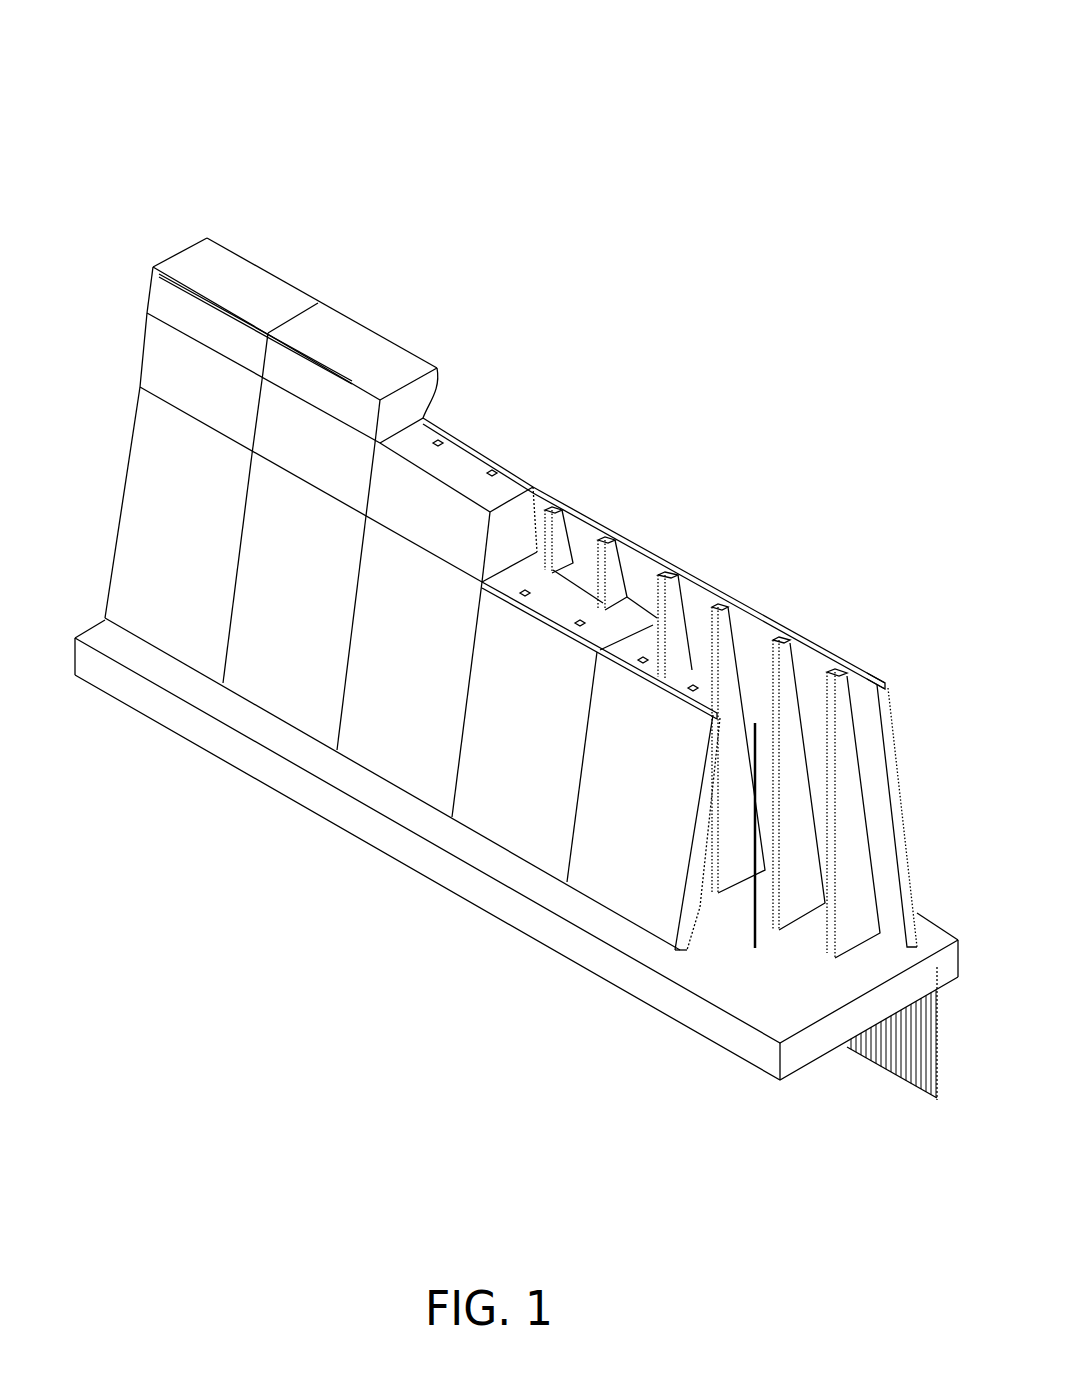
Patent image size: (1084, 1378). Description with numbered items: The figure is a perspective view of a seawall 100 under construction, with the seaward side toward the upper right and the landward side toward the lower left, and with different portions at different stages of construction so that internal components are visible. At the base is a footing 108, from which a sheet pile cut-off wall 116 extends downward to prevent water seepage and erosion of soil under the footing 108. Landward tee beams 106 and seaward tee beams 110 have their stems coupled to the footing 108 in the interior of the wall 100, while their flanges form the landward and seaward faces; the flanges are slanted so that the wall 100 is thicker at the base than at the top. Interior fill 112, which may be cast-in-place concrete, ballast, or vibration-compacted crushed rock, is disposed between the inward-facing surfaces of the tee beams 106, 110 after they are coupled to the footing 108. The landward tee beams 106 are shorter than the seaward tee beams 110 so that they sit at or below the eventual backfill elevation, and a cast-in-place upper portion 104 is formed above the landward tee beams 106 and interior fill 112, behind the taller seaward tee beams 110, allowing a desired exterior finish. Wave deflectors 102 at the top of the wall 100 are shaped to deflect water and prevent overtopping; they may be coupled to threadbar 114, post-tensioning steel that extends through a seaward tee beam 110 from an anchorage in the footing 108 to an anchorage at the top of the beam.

The seawall 100 is at (142, 57).
The wave deflector 102 is at (203, 255).
The cast-in-place upper portion 104 is at (143, 365).
The landward tee beam 106 is at (137, 457).
The footing 108 is at (207, 735).
The seaward tee beam 110 is at (543, 490).
The interior fill 112 is at (578, 580).
The threadbar 114 is at (755, 948).
The sheet pile cut-off wall 116 is at (897, 1072).